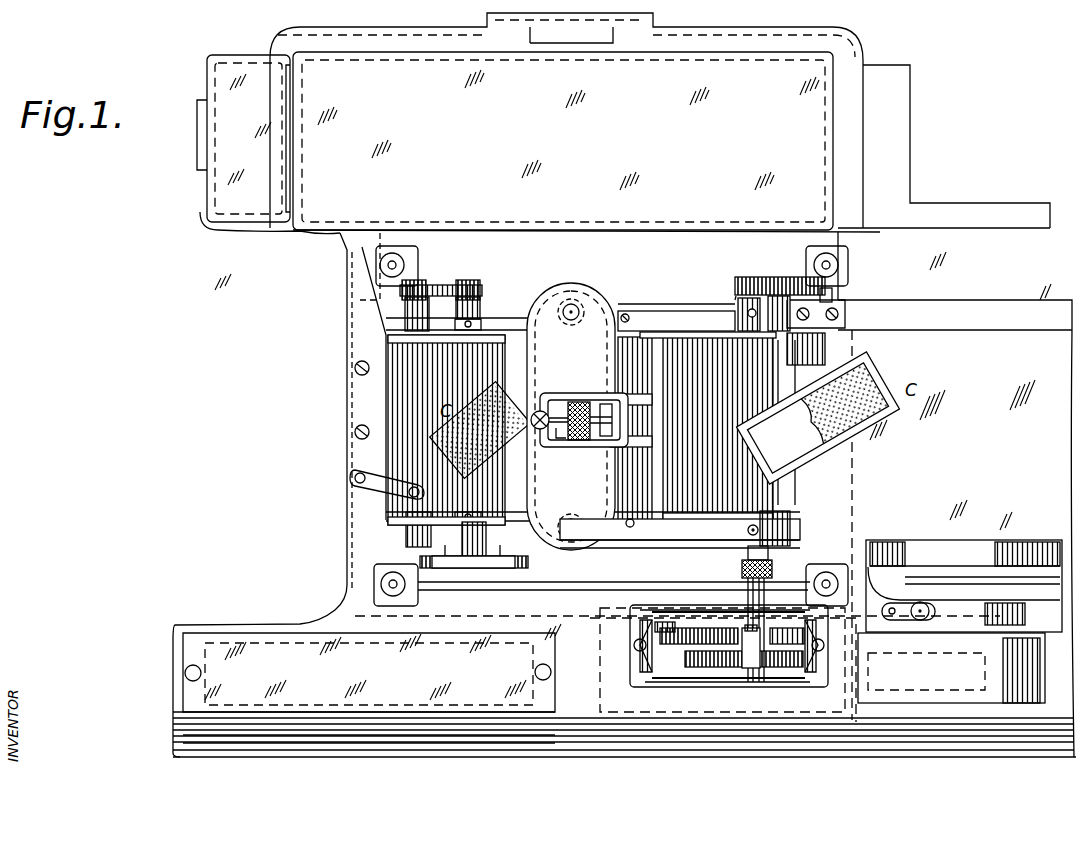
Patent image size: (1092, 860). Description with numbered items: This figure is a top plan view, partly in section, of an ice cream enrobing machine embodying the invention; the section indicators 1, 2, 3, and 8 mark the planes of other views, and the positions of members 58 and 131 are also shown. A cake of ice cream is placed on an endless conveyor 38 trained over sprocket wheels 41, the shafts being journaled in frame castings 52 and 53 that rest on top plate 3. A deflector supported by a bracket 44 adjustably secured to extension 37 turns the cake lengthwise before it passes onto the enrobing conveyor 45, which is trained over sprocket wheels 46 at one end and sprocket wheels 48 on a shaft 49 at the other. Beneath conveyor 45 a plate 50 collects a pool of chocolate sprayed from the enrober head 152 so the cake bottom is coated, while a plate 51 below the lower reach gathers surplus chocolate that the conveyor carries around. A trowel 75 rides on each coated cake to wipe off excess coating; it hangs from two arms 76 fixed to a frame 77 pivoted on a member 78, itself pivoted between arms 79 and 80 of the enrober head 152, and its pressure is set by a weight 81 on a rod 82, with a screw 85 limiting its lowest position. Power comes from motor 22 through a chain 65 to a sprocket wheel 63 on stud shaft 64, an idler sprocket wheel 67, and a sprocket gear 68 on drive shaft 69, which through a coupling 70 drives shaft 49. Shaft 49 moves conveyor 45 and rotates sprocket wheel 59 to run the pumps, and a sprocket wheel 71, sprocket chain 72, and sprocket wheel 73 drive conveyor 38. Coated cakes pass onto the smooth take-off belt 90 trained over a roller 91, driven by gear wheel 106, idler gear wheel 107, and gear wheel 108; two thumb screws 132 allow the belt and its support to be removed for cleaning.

The section line 1 is at (955, 184).
The section line 2 is at (1030, 668).
The top plate 3 is at (650, 232).
The section line 8 is at (897, 550).
The motor 22 is at (956, 588).
The extension 37 is at (345, 358).
The endless conveyor 38 is at (396, 400).
The sprocket wheels 41 is at (412, 330).
The bracket 44 is at (380, 478).
The enrobing conveyor 45 is at (683, 334).
The sprocket wheels 46 is at (481, 327).
The sprocket wheels 48 is at (779, 338).
The shaft 49 is at (748, 536).
The plate 50 is at (652, 318).
The plate 51 is at (452, 548).
The frame casting 52 is at (637, 315).
The frame casting 53 is at (666, 536).
The gear bar 58 is at (508, 568).
The sprocket wheel 59 is at (472, 560).
The sprocket wheel 63 is at (637, 627).
The stud shaft 64 is at (682, 630).
The sprocket chain 65 is at (672, 655).
The idler sprocket wheel 67 is at (700, 667).
The sprocket gear 68 is at (790, 667).
The drive shaft 69 is at (762, 632).
The coupling 70 is at (774, 568).
The sprocket wheel 71 is at (468, 284).
The sprocket chain 72 is at (448, 284).
The sprocket wheel 73 is at (415, 283).
The trowel 75 is at (650, 490).
The arms 76 is at (630, 393).
The frame 77 is at (576, 447).
The member 78 is at (587, 442).
The arm 79 is at (554, 440).
The arm 80 is at (606, 404).
The weight 81 is at (578, 400).
The rod 82 is at (554, 415).
The screw 85 is at (540, 410).
The take-off belt 90 is at (955, 332).
The roller 91 is at (817, 350).
The gear wheel 106 is at (733, 278).
The idler gear wheel 107 is at (763, 278).
The gear wheel 108 is at (834, 290).
The bearing 131 is at (392, 255).
The thumb screws 132 is at (842, 262).
The enrober head 152 is at (538, 300).